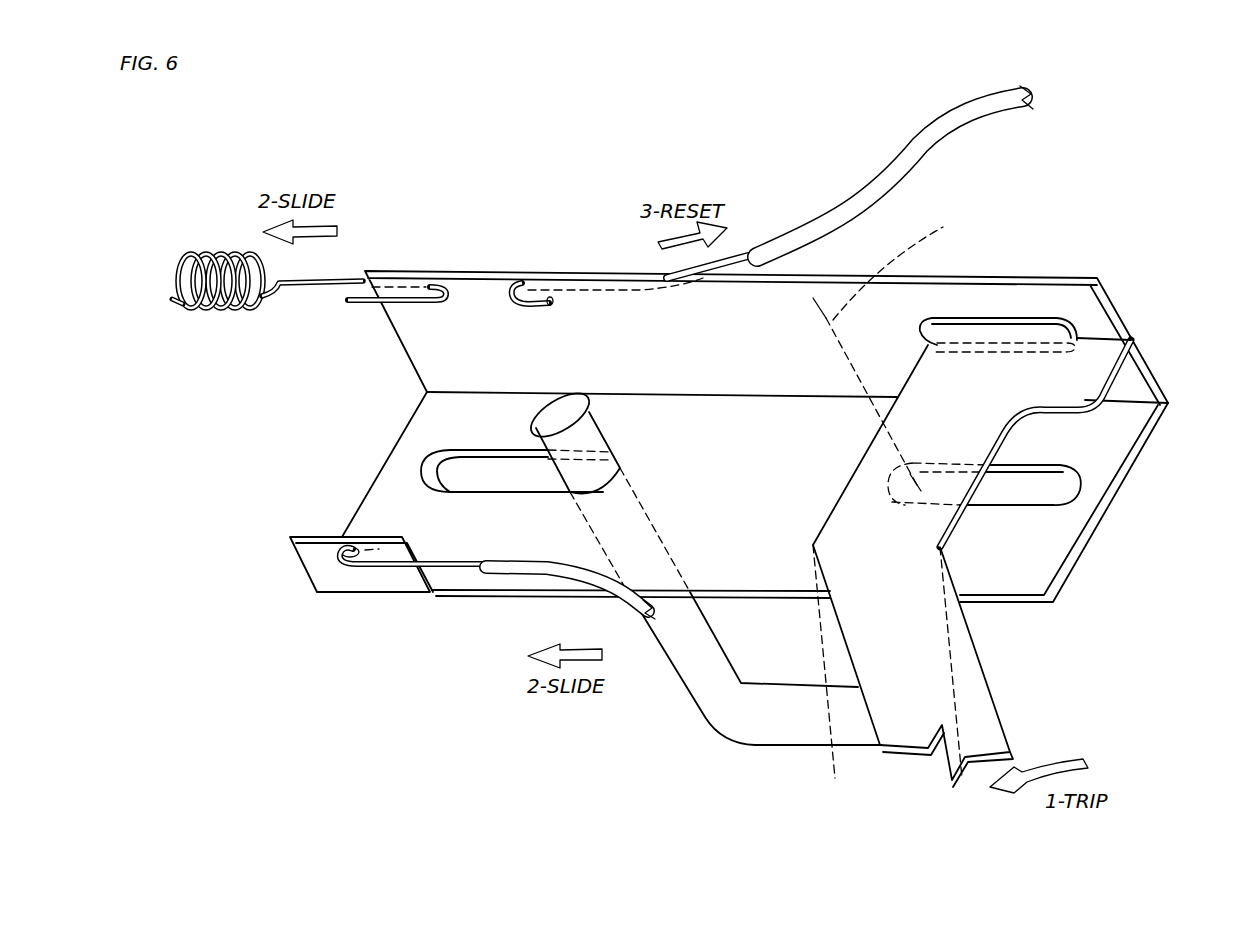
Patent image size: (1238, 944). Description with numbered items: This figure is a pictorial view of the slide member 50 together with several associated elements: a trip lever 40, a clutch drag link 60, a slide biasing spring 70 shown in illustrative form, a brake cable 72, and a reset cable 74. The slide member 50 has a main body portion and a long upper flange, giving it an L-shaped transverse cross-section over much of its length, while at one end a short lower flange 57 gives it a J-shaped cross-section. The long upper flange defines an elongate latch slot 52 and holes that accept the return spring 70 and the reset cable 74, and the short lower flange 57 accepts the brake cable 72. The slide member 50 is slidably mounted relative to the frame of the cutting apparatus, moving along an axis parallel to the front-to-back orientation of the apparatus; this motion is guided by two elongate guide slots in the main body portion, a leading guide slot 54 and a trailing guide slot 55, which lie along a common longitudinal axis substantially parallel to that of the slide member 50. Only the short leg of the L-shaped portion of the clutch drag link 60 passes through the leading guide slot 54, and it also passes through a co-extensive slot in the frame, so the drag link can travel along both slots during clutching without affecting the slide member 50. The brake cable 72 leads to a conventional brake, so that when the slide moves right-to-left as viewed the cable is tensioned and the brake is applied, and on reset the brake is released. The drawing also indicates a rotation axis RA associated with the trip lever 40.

The slide member 50 is at (467, 302).
The latch slot 52 is at (930, 322).
The leading guide slot 54 is at (437, 477).
The trailing guide slot 55 is at (1067, 478).
The short lower flange 57 is at (363, 583).
The clutch drag link 60 is at (690, 677).
The trip lever 40 is at (840, 530).
The slide biasing spring 70 is at (236, 310).
The brake cable 72 is at (502, 570).
The reset cable 74 is at (903, 163).
The rotation axis RA is at (932, 340).